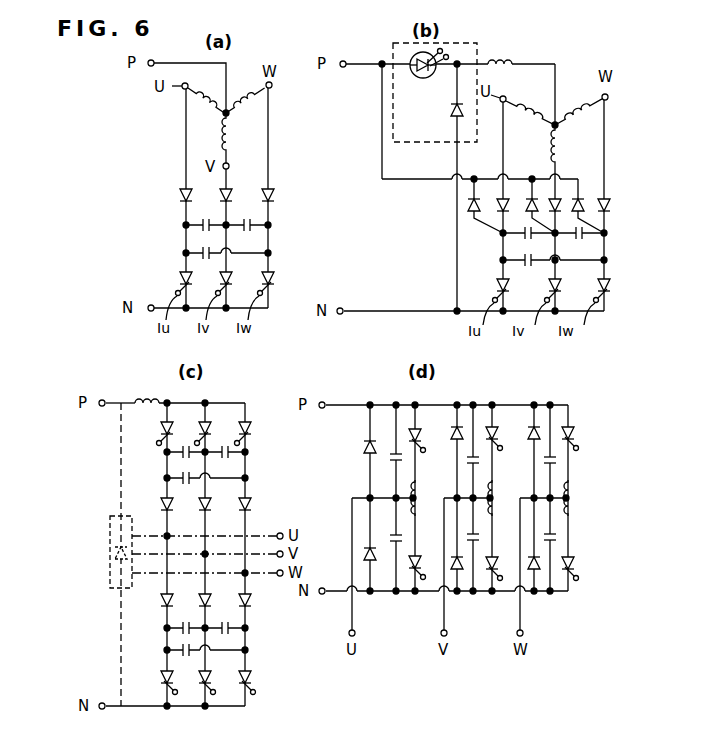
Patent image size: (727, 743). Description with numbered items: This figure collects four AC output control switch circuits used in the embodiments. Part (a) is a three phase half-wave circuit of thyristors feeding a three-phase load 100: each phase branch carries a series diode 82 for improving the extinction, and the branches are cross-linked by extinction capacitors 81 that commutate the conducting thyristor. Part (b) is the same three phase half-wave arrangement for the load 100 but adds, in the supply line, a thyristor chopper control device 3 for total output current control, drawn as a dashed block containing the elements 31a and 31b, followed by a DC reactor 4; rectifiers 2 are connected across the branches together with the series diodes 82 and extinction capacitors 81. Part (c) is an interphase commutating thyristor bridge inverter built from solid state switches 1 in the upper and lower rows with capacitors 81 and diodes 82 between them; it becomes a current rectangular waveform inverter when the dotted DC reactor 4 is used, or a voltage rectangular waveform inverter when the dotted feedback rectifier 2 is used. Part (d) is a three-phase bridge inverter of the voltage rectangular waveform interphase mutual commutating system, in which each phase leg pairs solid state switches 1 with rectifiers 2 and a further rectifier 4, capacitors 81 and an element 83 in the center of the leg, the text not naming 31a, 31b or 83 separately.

The load 100 is at (207, 103).
The series diode 82 is at (181, 194).
The extinction capacitor 81 is at (185, 225).
The rectifier 2 is at (470, 206).
The thyristor chopper control device 3 is at (470, 36).
The DC reactor 4 is at (498, 62).
The thyristor 31a is at (421, 79).
The diode 31b is at (450, 112).
The solid state switch 1 is at (251, 429).
The reactor 83 is at (417, 504).